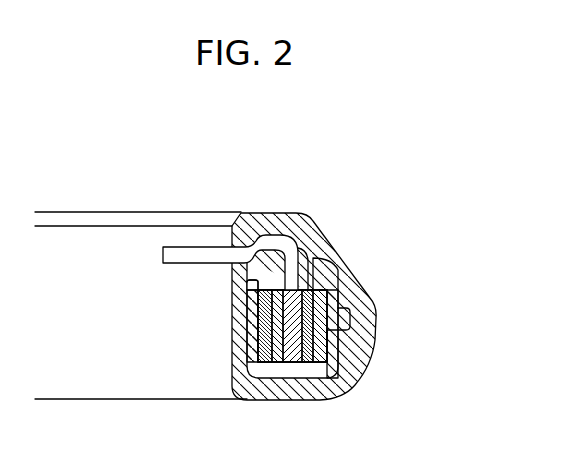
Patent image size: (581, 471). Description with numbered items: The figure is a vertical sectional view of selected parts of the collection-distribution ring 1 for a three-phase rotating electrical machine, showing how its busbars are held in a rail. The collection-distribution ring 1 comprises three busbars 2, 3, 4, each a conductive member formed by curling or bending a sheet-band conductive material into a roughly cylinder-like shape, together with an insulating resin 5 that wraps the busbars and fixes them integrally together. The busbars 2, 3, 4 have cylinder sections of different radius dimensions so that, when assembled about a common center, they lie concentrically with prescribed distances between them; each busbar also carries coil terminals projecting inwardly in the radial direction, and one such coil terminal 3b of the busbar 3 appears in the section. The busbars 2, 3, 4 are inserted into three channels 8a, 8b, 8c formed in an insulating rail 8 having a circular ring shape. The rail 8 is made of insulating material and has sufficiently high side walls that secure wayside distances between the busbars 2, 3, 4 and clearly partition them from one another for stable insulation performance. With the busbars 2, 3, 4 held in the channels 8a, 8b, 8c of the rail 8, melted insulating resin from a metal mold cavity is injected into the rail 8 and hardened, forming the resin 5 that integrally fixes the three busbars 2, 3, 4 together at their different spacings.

The collection-distribution ring 1 is at (447, 228).
The busbar 2 is at (352, 294).
The busbar 3 is at (290, 366).
The coil terminal 3b is at (178, 254).
The busbar 4 is at (262, 350).
The insulating resin 5 is at (106, 212).
The insulating rail 8 is at (318, 378).
The channel 8a is at (334, 293).
The channel 8b is at (300, 256).
The channel 8c is at (250, 283).